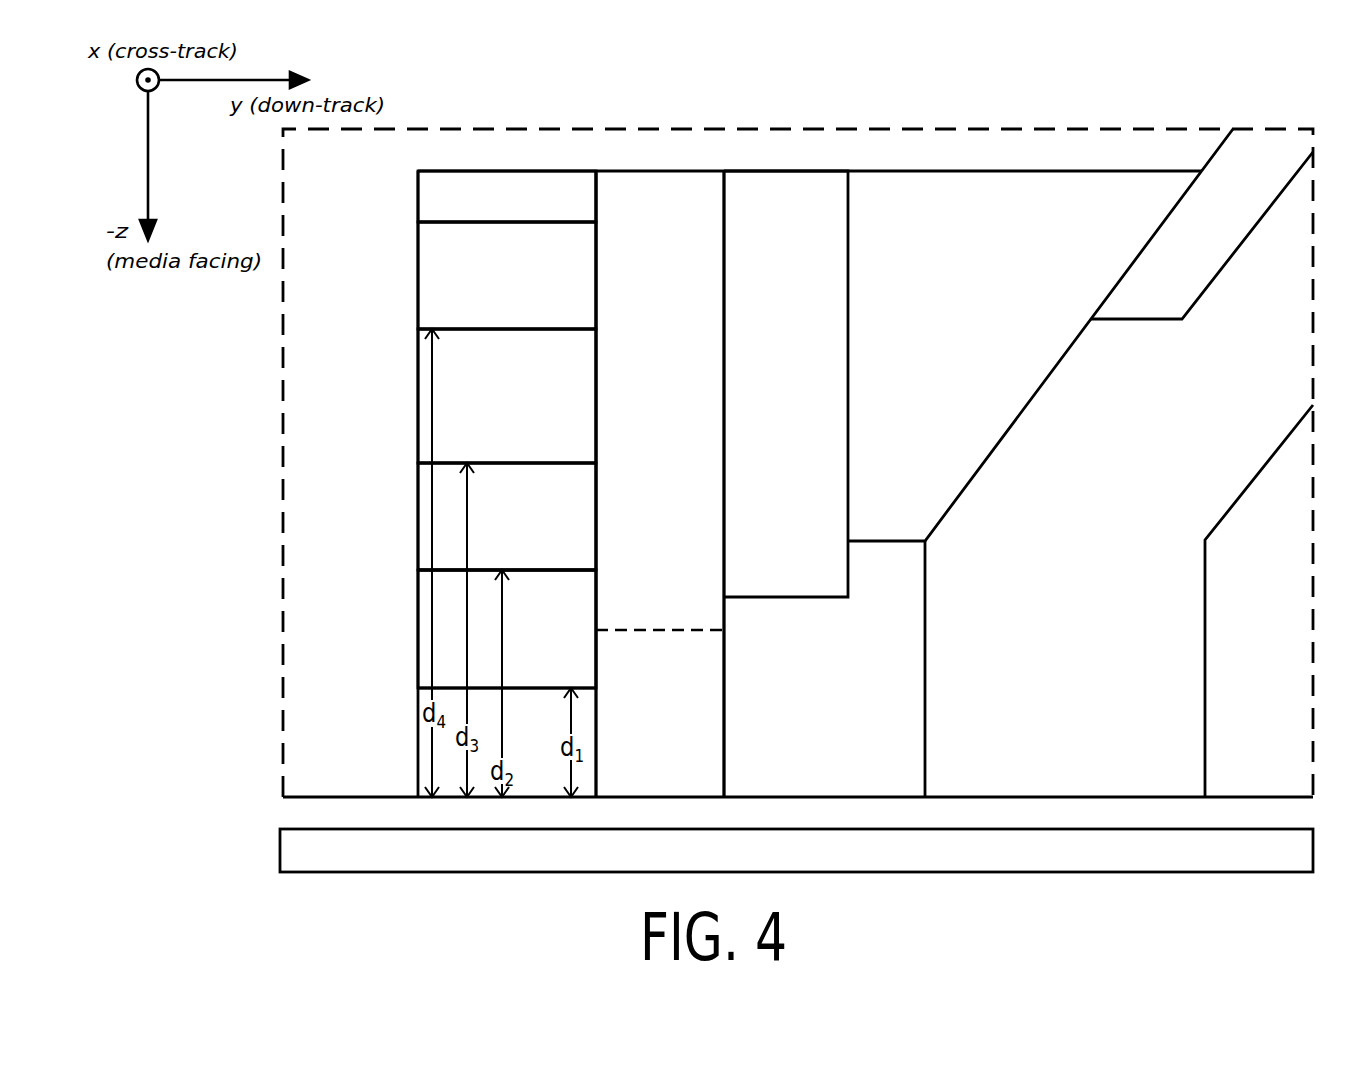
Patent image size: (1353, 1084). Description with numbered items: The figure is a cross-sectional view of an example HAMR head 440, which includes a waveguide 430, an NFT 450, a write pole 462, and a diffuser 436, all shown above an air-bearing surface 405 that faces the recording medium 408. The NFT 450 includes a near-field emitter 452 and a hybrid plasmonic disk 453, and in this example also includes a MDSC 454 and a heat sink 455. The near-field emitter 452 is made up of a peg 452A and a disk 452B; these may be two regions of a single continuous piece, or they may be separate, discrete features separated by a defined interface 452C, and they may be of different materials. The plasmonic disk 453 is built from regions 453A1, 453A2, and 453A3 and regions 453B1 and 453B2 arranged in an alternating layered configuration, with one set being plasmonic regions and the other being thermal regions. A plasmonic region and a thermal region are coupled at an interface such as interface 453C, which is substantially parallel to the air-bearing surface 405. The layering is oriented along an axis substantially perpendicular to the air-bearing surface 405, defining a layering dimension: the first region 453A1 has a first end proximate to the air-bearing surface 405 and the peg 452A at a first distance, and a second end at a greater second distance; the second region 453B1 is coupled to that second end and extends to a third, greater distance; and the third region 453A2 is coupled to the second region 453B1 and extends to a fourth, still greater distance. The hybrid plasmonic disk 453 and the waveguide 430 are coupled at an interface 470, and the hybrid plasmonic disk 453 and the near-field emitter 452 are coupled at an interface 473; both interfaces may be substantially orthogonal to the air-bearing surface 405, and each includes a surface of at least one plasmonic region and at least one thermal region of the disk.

The air-bearing surface 405 is at (290, 800).
The magnetic recording medium 408 is at (290, 842).
The waveguide 430 is at (372, 452).
The diffuser 436 is at (1208, 262).
The HAMR head 440 is at (1168, 107).
The NFT 450 is at (842, 143).
The near-field emitter 452 is at (683, 445).
The peg 452A is at (700, 746).
The disk 452B is at (705, 268).
The interface 452C is at (657, 623).
The plasmonic disk 453 is at (380, 250).
The first region 453A1 is at (590, 648).
The third region 453A2 is at (593, 415).
The region 453A3 is at (593, 209).
The second region 453B1 is at (590, 535).
The region 453B2 is at (593, 292).
The interface 453C is at (418, 571).
The MDSC 454 is at (807, 400).
The heat sink 455 is at (985, 344).
The write pole 462 is at (1174, 442).
The interface 470 is at (418, 177).
The interface 473 is at (597, 170).